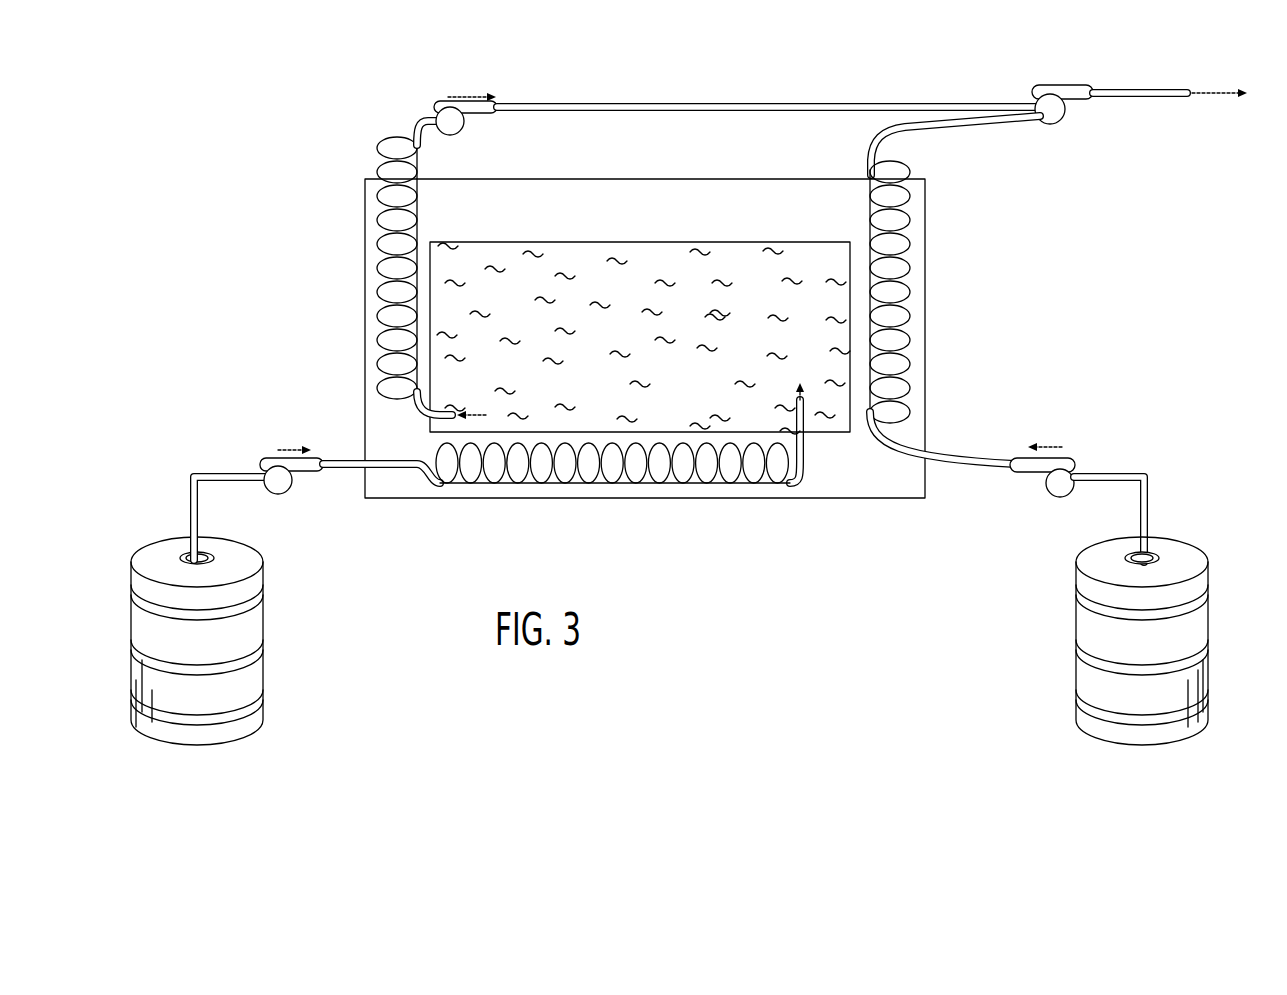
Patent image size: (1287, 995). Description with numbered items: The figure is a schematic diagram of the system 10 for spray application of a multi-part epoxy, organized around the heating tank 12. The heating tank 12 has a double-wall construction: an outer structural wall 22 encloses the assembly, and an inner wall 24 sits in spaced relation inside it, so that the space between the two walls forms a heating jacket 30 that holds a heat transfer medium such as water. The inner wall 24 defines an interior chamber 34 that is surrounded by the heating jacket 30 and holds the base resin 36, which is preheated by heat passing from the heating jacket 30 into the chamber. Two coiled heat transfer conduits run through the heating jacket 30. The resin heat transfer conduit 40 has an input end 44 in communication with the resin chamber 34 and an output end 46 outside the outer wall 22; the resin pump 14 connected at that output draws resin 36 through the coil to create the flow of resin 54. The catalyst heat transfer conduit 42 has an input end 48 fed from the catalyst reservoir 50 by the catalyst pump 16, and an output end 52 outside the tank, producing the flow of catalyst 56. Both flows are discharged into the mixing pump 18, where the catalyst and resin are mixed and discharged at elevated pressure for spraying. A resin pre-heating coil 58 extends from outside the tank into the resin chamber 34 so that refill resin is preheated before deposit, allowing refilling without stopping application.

The system 10 is at (794, 562).
The heating tank 12 is at (877, 489).
The resin pump 14 is at (455, 133).
The catalyst pump 16 is at (1070, 462).
The mixing pump 18 is at (1057, 122).
The outer structural wall 22 is at (700, 178).
The inner wall 24 is at (780, 243).
The heating jacket 30 is at (828, 486).
The interior chamber 34 is at (592, 258).
The base resin material 36 is at (677, 379).
The resin heat transfer conduit 40 is at (378, 320).
The catalyst heat transfer conduit 42 is at (908, 336).
The input end 44 is at (437, 416).
The output end 46 is at (985, 104).
The input end 48 is at (1153, 556).
The catalyst reservoir 50 is at (1190, 636).
The output end 52 is at (1008, 118).
The flow of resin 54 is at (457, 95).
The flow of catalyst 56 is at (1050, 443).
The resin pre-heating coil 58 is at (555, 485).